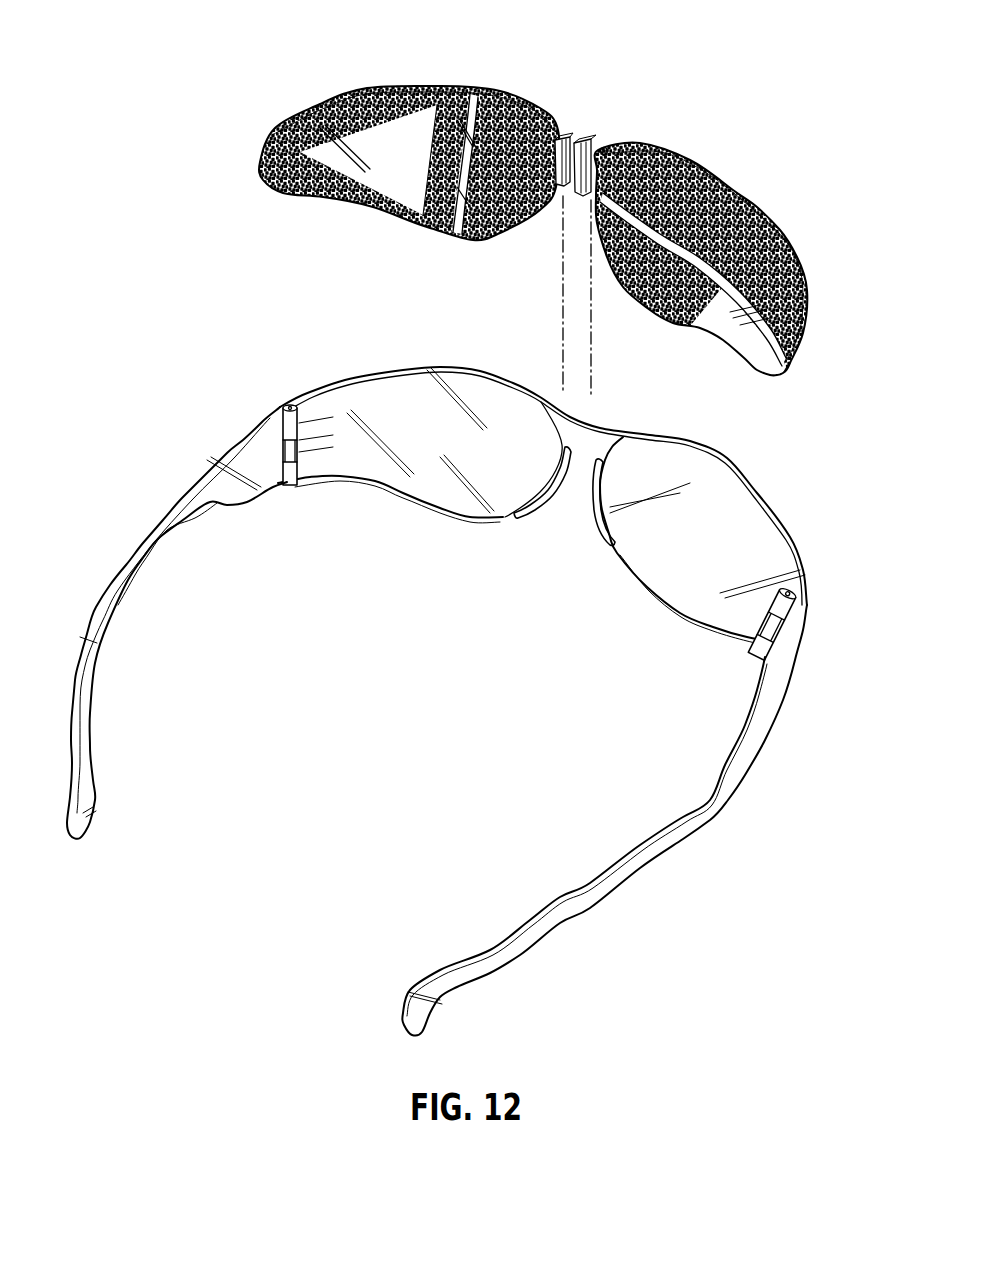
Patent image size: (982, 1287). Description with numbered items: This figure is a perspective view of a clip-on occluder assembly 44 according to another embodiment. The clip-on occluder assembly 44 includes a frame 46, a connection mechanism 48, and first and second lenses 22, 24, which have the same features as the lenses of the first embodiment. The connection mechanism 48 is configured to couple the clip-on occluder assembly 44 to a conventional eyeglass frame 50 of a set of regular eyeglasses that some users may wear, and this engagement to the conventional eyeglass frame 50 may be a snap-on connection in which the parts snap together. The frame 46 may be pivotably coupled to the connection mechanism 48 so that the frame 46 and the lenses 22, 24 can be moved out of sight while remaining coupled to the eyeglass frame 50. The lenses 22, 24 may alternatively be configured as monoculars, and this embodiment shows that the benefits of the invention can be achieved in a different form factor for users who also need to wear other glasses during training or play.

The clip-on occluder assembly 44 is at (313, 66).
The first lens 22 is at (427, 239).
The second lens 24 is at (659, 324).
The frame 46 is at (543, 119).
The connection mechanism 48 is at (598, 141).
The conventional eyeglass frame 50 is at (612, 430).